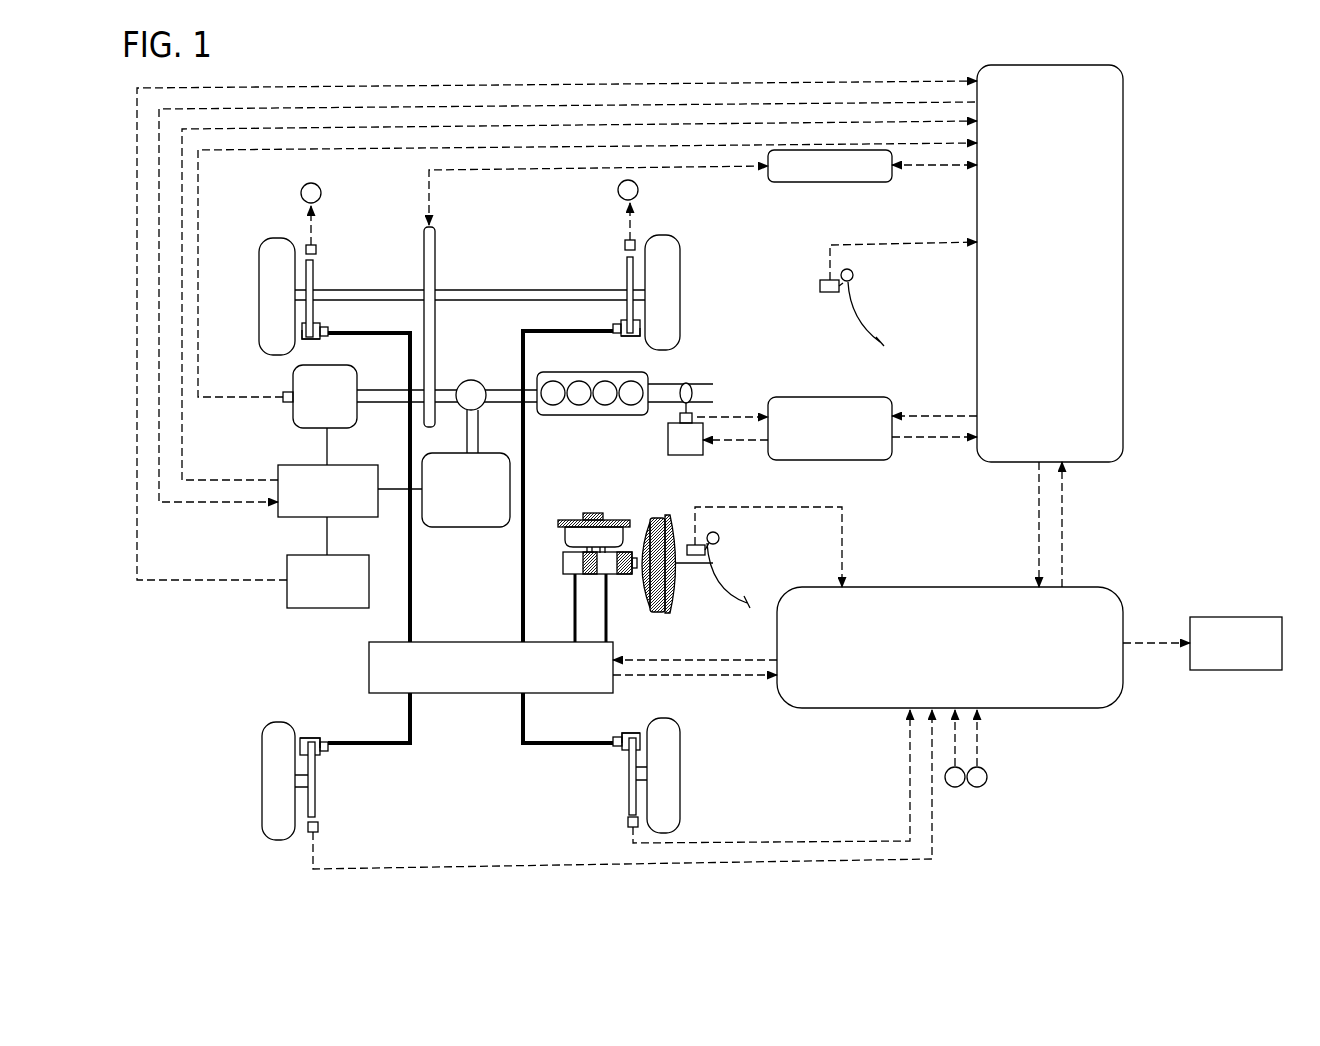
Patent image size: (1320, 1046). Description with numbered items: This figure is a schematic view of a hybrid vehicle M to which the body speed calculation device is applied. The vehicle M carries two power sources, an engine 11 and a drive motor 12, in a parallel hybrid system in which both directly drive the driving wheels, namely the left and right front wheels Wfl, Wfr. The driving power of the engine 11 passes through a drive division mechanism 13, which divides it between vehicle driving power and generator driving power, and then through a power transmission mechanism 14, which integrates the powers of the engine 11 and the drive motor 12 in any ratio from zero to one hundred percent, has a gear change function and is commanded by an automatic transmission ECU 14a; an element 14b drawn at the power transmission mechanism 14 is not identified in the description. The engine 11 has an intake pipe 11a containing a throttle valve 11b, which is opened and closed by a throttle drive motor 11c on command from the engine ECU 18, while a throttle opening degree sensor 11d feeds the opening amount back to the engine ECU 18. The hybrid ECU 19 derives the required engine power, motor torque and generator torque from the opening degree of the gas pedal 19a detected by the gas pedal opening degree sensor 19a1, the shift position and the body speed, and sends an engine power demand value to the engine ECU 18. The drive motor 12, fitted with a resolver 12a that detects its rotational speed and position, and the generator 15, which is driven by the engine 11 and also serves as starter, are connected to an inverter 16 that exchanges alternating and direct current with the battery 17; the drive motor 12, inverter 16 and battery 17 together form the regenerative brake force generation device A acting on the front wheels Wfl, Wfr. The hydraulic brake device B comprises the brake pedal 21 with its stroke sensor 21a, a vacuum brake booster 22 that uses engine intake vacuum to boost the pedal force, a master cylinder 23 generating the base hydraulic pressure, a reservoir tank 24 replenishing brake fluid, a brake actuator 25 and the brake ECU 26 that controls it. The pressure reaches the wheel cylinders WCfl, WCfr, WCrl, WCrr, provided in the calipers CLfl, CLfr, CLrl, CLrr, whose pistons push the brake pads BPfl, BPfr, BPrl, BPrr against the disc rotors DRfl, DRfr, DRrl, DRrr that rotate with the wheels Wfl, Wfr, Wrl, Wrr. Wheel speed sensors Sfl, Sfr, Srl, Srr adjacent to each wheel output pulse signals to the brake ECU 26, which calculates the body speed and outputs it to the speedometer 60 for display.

The vehicle M is at (540, 77).
The regenerative brake force generation device A is at (272, 470).
The hydraulic brake device B is at (665, 686).
The engine 11 is at (590, 374).
The intake pipe 11a is at (682, 384).
The throttle valve 11b is at (698, 396).
The throttle drive motor 11c is at (686, 455).
The throttle opening degree sensor 11d is at (699, 420).
The drive motor 12 is at (330, 367).
The resolver 12a is at (283, 393).
The drive division mechanism 13 is at (476, 380).
The power transmission mechanism 14 is at (448, 364).
The automatic transmission ECU 14a is at (830, 183).
The transmission gear 14b is at (429, 327).
The generator 15 is at (470, 528).
The inverter 16 is at (345, 466).
The battery 17 is at (345, 556).
The engine ECU 18 is at (858, 398).
The hybrid ECU 19 is at (977, 300).
The gas pedal 19a is at (855, 309).
The gas pedal opening degree sensor 19a1 is at (820, 286).
The brake pedal 21 is at (720, 575).
The stroke sensor 21a is at (712, 546).
The vacuum brake booster 22 is at (680, 577).
The master cylinder 23 is at (563, 562).
The reservoir tank 24 is at (582, 518).
The brake actuator 25 is at (485, 642).
The brake ECU 26 is at (962, 587).
The speedometer 60 is at (1237, 617).
The left front wheel Wfl is at (260, 287).
The right front wheel Wfr is at (681, 284).
The left rear wheel Wrl is at (262, 778).
The right rear wheel Wrr is at (680, 782).
The wheel speed sensor Sfl is at (318, 249).
The wheel speed sensor Sfr is at (625, 246).
The wheel speed sensor Srl is at (318, 827).
The wheel speed sensor Srr is at (628, 822).
The disc rotor DRfl is at (313, 281).
The disc rotor DRfr is at (627, 279).
The disc rotor DRrl is at (315, 780).
The disc rotor DRrr is at (0, 0).
The wheel cylinder WCfl is at (328, 331).
The wheel cylinder WCfr is at (613, 328).
The wheel cylinder WCrl is at (328, 745).
The wheel cylinder WCrr is at (613, 740).
The brake pads BPfl is at (306, 332).
The brake pads BPfr is at (633, 325).
The brake pads BPrl is at (306, 750).
The brake pads BPrr is at (645, 749).
The caliper CLfl is at (300, 338).
The caliper CLfr is at (645, 340).
The caliper CLrl is at (300, 745).
The caliper CLrr is at (645, 745).